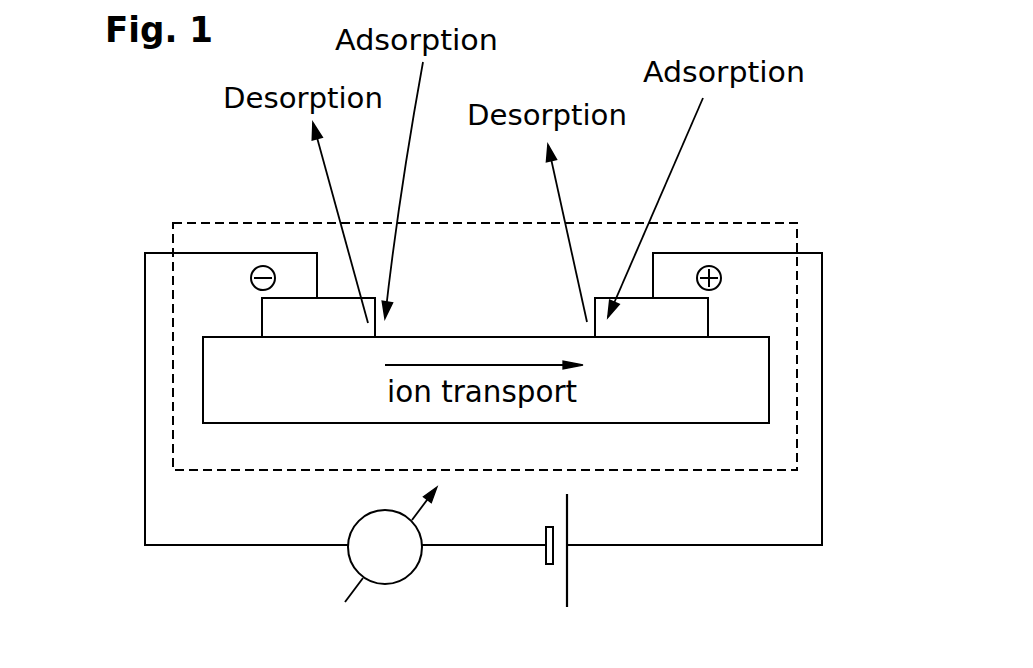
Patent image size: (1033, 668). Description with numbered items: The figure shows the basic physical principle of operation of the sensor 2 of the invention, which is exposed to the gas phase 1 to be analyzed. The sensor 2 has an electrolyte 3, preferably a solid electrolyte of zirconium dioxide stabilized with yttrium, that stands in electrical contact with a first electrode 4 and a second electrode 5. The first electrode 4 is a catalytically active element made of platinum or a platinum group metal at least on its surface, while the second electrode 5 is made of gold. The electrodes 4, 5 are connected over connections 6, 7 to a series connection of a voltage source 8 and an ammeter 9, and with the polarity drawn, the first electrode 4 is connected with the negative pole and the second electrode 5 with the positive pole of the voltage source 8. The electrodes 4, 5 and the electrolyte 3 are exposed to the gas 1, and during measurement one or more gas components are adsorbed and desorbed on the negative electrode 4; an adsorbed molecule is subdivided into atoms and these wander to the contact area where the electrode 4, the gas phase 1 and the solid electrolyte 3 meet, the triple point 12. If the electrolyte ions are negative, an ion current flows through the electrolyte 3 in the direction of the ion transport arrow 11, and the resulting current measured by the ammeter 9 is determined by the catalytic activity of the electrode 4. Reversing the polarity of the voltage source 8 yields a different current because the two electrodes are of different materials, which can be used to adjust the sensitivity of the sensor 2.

The gas phase 1 is at (475, 296).
The sensor 2 is at (722, 223).
The electrolyte 3 is at (692, 388).
The first electrode 4 is at (275, 317).
The second electrode 5 is at (680, 320).
The connection 6 is at (173, 252).
The connection 7 is at (797, 250).
The voltage source 8 is at (569, 587).
The ammeter 9 is at (398, 578).
The ion transport arrow 11 is at (490, 363).
The triple point 12 is at (375, 337).